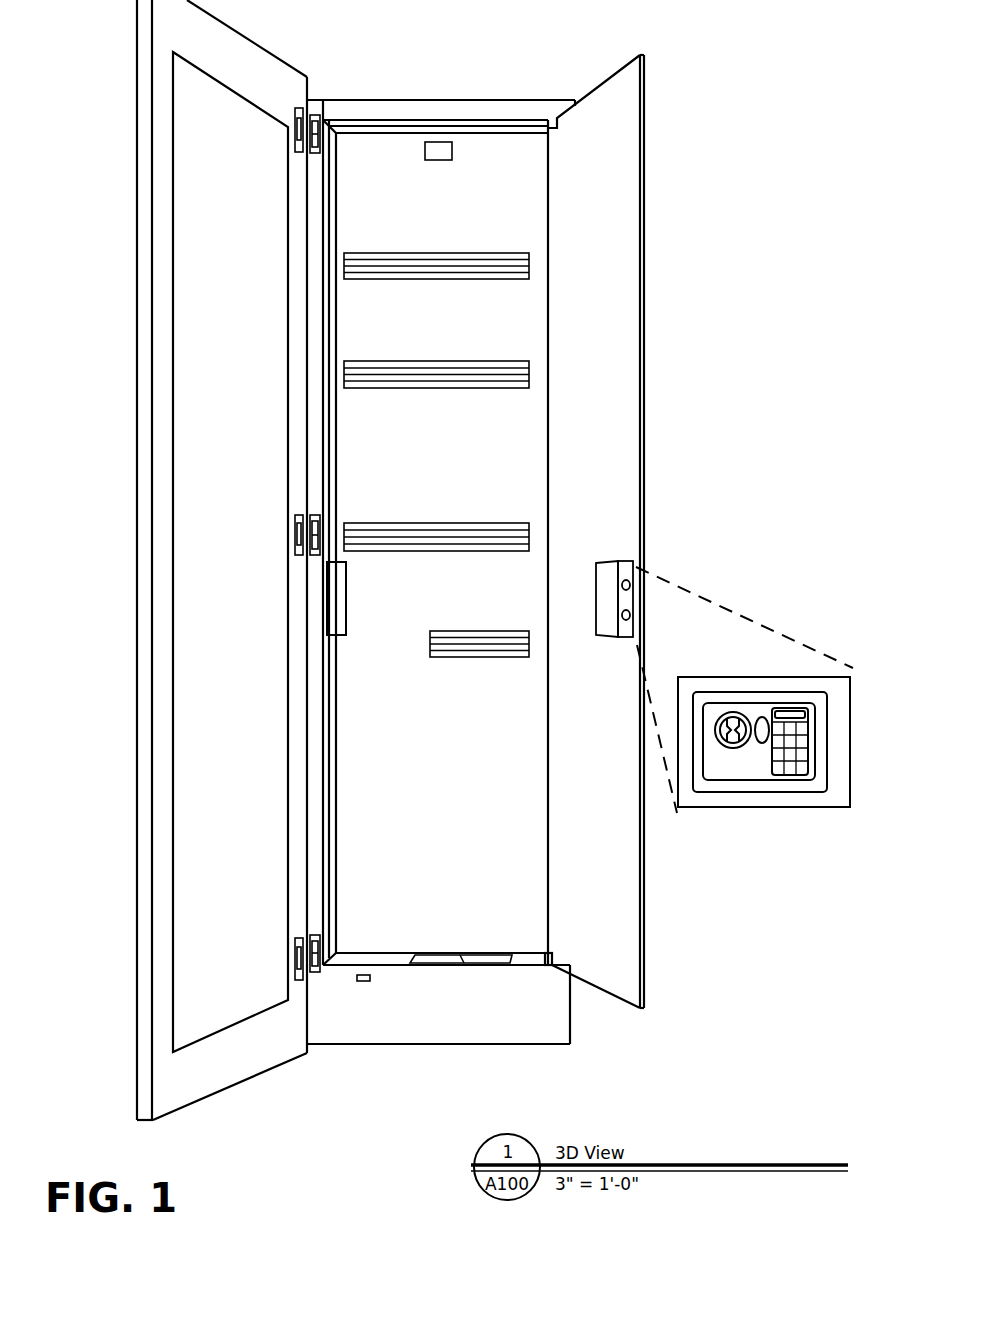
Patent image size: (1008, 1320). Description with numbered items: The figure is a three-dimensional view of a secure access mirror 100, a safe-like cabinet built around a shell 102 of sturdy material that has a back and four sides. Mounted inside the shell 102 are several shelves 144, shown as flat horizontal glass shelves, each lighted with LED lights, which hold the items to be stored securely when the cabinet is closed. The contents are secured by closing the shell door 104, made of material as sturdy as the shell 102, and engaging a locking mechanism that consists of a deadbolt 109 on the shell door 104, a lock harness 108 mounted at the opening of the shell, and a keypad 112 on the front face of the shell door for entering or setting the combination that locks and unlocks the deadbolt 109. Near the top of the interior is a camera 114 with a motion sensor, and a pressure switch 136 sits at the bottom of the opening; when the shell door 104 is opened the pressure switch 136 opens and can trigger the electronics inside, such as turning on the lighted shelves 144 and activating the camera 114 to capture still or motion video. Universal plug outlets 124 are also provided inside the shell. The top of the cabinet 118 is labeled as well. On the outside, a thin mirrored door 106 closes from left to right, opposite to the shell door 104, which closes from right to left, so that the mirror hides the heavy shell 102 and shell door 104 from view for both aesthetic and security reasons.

The secure access mirror 100 is at (778, 362).
The shell 102 is at (540, 680).
The shell door 104 is at (648, 256).
The mirrored door 106 is at (134, 430).
The lock harness 108 is at (348, 587).
The deadbolt 109 is at (595, 560).
The keypad 112 is at (744, 700).
The camera 114 is at (618, 94).
The cabinet top 118 is at (441, 83).
The universal plug outlets 124 is at (447, 920).
The pressure switch 136 is at (388, 883).
The shelves 144 is at (436, 455).